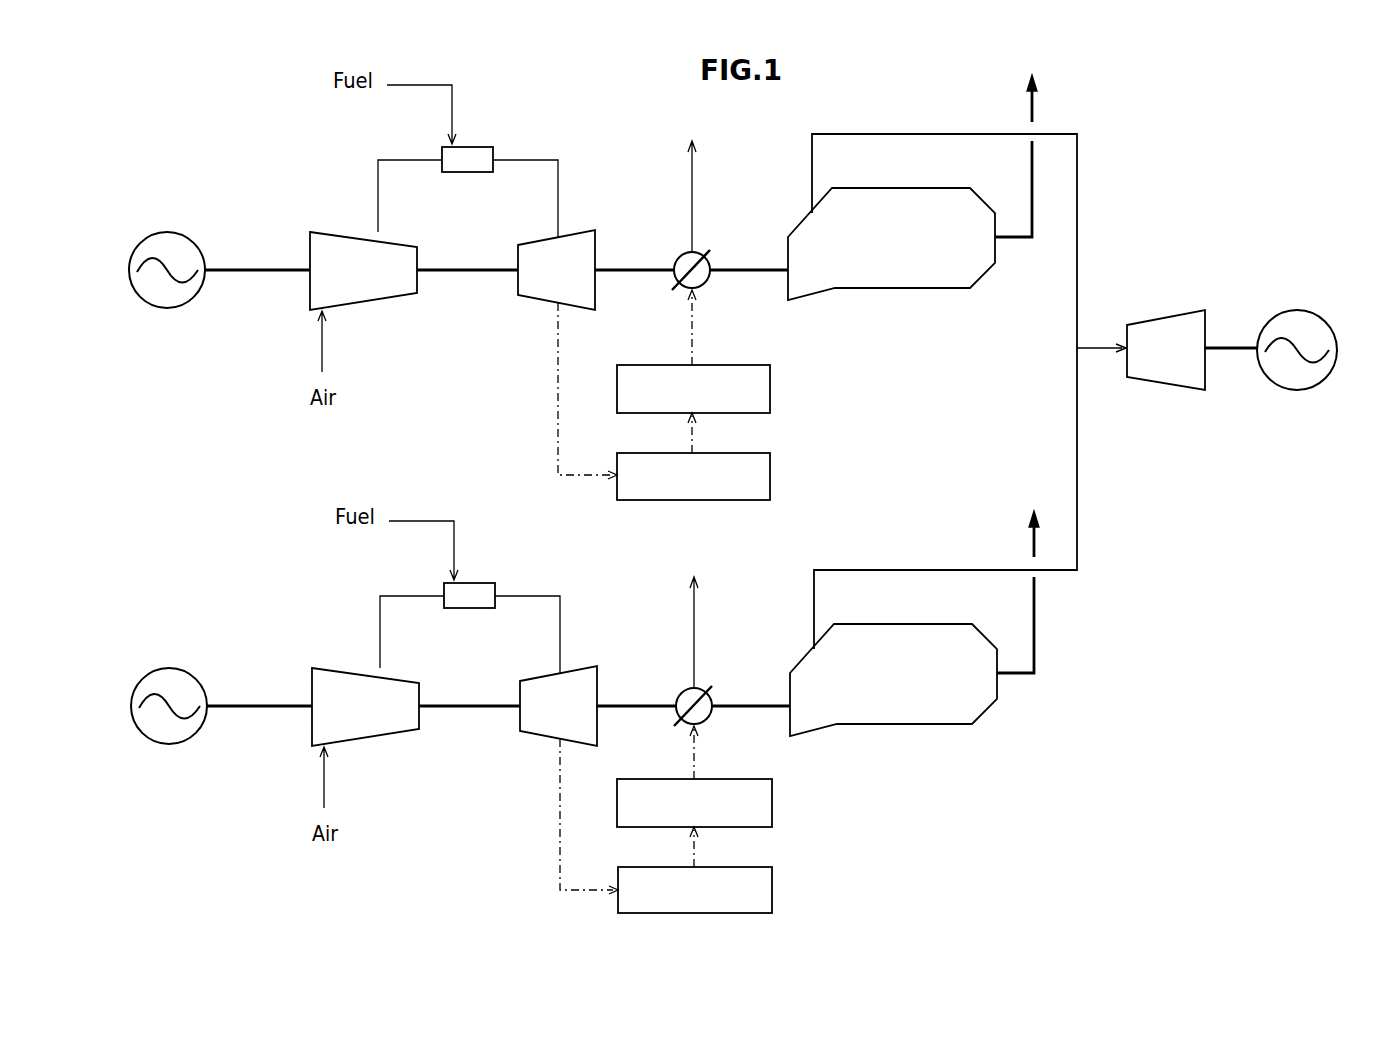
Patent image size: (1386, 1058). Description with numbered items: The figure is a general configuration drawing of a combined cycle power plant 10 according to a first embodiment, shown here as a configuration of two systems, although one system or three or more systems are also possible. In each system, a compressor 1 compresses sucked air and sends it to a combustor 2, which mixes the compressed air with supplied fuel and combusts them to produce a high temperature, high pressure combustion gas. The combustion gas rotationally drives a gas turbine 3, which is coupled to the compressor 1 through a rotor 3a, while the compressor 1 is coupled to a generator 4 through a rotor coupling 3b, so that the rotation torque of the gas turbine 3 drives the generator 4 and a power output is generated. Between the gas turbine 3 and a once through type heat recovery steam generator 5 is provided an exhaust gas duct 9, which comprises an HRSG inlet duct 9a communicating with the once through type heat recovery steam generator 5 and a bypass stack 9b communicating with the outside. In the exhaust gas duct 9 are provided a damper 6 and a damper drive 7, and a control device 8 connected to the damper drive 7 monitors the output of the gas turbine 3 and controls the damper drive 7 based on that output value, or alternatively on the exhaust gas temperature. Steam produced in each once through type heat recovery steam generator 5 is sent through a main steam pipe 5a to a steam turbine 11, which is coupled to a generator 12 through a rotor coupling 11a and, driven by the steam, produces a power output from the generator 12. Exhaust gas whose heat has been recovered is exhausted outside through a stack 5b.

The compressor 1 is at (318, 232).
The combustor 2 is at (478, 146).
The gas turbine 3 is at (578, 233).
The rotor 3a is at (468, 273).
The rotor coupling 3b is at (257, 273).
The generator 4 is at (143, 240).
The once through type heat recovery steam generator 5 is at (902, 289).
The main steam pipe 5a is at (981, 133).
The stack 5b is at (1033, 215).
The damper 6 is at (675, 693).
The damper drive 7 is at (770, 390).
The control device 8 is at (770, 479).
The exhaust gas duct 9 is at (625, 735).
The HRSG inlet duct 9a is at (763, 704).
The bypass stack 9b is at (702, 183).
The combined cycle power plant 10 is at (1151, 200).
The steam turbine 11 is at (1163, 383).
The rotor coupling 11a is at (1230, 351).
The generator 12 is at (1283, 389).